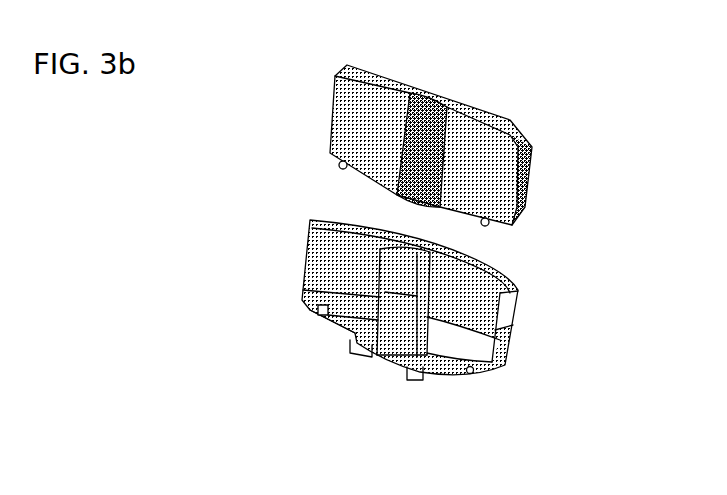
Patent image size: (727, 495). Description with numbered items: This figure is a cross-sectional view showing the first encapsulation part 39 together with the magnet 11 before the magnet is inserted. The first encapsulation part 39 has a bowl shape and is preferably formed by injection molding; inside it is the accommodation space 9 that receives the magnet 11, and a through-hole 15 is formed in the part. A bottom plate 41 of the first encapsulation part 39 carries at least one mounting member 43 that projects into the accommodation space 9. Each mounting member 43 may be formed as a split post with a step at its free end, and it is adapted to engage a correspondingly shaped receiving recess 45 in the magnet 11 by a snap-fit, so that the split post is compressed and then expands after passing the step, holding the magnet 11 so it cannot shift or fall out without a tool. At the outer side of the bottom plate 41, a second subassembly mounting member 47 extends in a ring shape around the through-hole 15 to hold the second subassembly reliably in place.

The magnet 11 is at (341, 129).
The receiving recess 45 is at (340, 172).
The accommodation space 9 is at (340, 275).
The through-hole 15 is at (385, 335).
The bottom plate 41 is at (437, 348).
The first encapsulation part 39 is at (507, 327).
The mounting member 43 is at (328, 316).
The second subassembly mounting member 47 is at (355, 343).